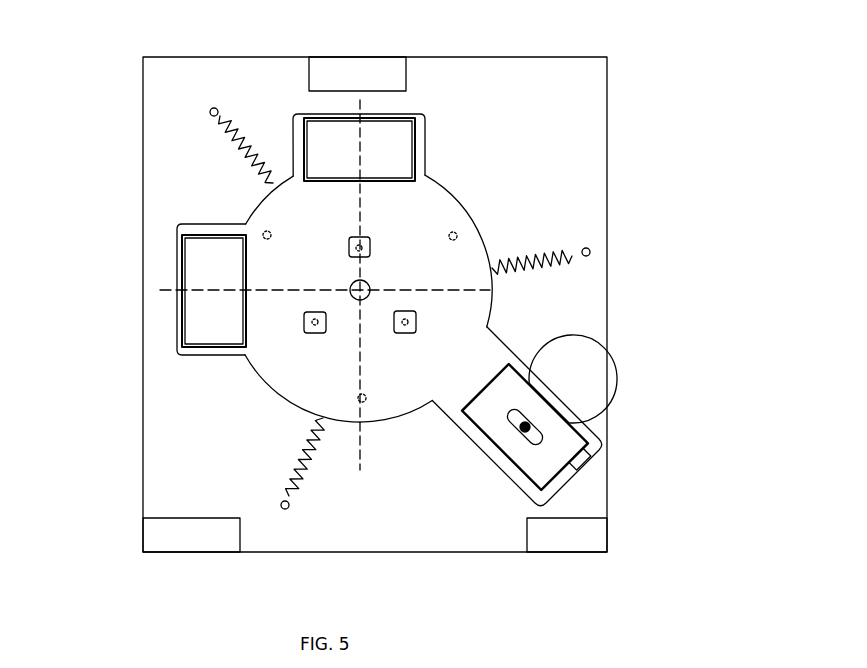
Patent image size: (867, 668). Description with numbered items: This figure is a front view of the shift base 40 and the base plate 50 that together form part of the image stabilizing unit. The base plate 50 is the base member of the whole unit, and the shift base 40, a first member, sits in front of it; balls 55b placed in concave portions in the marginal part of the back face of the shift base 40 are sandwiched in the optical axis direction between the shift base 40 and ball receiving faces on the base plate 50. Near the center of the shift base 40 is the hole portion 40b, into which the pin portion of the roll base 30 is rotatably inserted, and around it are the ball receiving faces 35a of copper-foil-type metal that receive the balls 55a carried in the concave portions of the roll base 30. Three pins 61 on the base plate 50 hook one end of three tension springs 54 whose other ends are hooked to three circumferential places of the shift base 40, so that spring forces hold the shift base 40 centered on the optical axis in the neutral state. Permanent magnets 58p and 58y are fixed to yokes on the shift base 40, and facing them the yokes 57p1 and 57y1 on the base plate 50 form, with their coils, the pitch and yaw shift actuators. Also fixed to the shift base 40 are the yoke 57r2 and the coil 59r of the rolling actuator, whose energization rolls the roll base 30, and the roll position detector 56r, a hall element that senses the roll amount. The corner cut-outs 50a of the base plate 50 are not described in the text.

The roll base 30 is at (492, 355).
The ball receiving face 35a is at (352, 247).
The shift base 40 is at (452, 212).
The hole portion 40b is at (355, 300).
The base plate 50 is at (155, 65).
The mounting notches 50a is at (390, 75).
The tension spring 54 is at (226, 128).
The ball 55a is at (370, 243).
The ball 55b is at (267, 235).
The roll position detector 56r is at (524, 429).
The yoke 57p1 is at (416, 125).
The yoke 57r2 is at (570, 462).
The yoke 57y1 is at (182, 250).
The permanent magnet 58p is at (318, 128).
The permanent magnet 58y is at (190, 325).
The coil 59r is at (583, 458).
The pin 61 is at (210, 111).